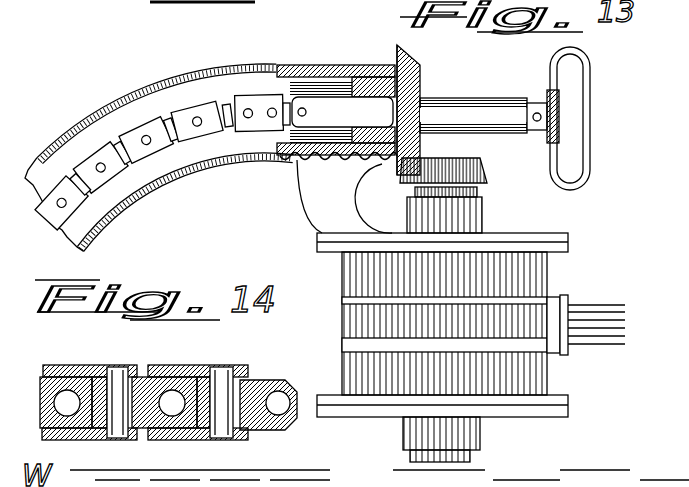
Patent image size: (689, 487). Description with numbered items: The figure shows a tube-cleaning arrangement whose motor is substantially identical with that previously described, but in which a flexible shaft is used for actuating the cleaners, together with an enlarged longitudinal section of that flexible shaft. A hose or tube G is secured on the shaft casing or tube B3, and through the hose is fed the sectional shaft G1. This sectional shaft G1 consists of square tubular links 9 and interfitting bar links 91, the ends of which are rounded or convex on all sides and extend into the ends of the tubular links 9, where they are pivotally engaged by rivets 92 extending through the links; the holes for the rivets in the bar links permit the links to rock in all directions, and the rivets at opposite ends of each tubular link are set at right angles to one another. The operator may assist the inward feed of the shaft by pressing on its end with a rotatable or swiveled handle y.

In FIG. 13, the hose or tube G is at (250, 68).
In FIG. 13, the sectional shaft G1 is at (158, 125).
In FIG. 13, the shaft casing or tube B3 is at (336, 70).
In FIG. 13, the handle y is at (585, 137).
In FIG. 13, the square tubular link 9 is at (121, 163).
In FIG. 14, the square tubular link 9 is at (188, 367).
In FIG. 13, the bar link 91 is at (87, 160).
In FIG. 14, the bar link 91 is at (262, 383).
In FIG. 13, the rivet 92 is at (62, 207).
In FIG. 14, the rivet 92 is at (230, 370).